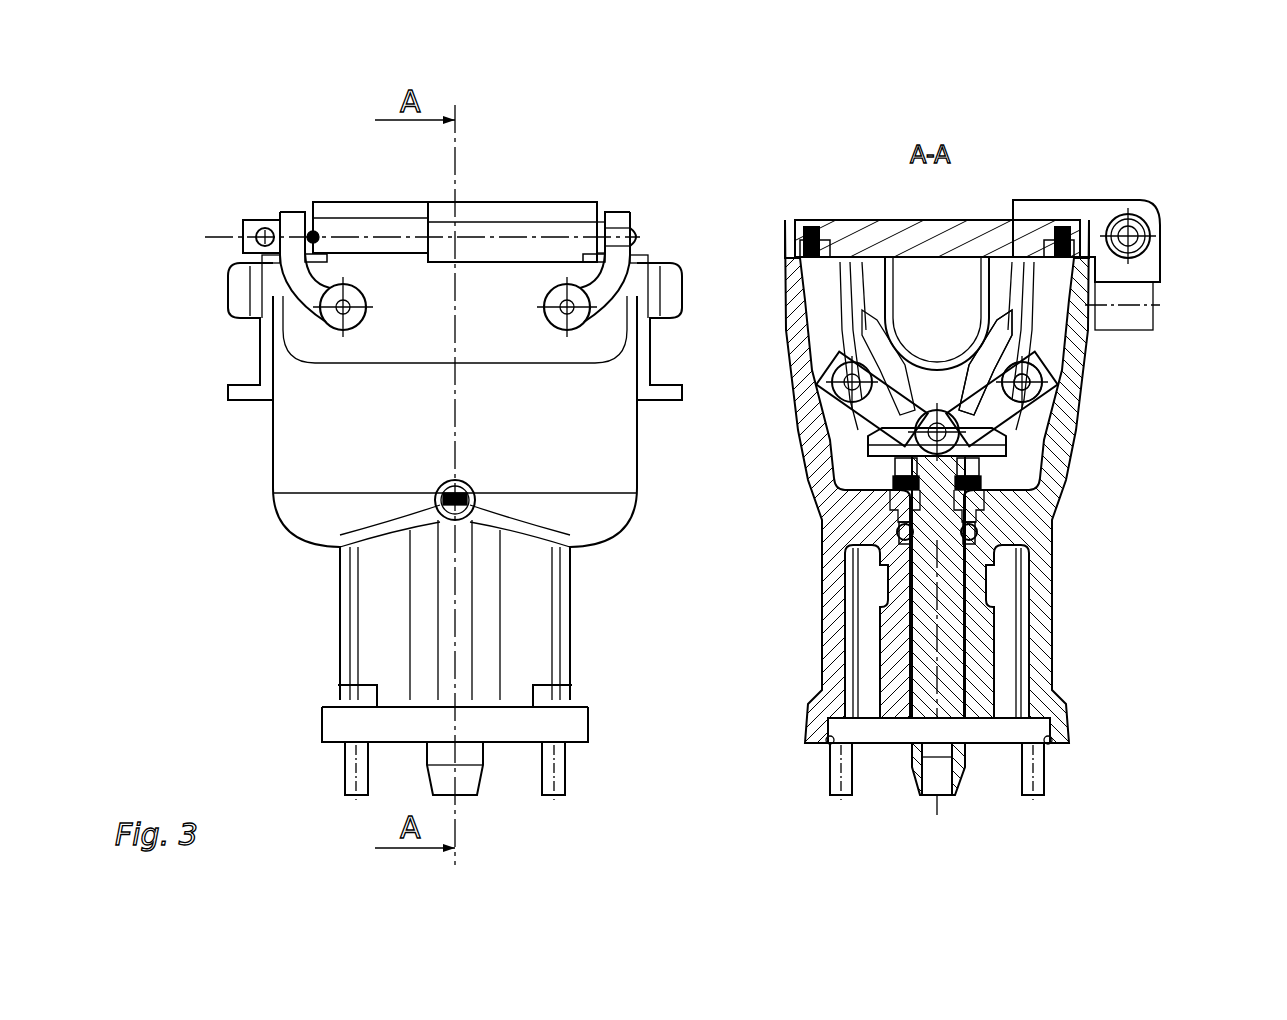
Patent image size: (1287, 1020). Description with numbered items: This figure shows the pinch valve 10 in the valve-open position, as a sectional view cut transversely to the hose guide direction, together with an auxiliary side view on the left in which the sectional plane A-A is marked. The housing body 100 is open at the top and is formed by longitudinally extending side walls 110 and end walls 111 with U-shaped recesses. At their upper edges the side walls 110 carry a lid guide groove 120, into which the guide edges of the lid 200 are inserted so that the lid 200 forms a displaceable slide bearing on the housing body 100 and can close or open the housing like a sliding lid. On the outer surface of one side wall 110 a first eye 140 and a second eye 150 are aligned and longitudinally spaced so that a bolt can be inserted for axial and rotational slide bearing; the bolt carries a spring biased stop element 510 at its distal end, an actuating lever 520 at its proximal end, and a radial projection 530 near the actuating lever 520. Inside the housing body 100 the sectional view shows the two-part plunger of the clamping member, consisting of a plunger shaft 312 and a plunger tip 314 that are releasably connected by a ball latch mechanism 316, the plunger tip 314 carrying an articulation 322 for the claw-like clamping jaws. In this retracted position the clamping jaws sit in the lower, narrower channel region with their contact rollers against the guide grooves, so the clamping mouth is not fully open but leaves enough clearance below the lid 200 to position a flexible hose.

The pinch valve 10 is at (783, 108).
The housing body 100 is at (797, 582).
The side walls 110 is at (548, 430).
The end walls 111 is at (275, 452).
The lid guide groove 120 is at (810, 255).
The first eye 140 is at (293, 212).
The second eye 150 is at (617, 212).
The lid 200 is at (540, 179).
The plunger shaft 312 is at (940, 560).
The plunger tip 314 is at (975, 447).
The ball latch mechanism 316 is at (968, 480).
The articulation 322 is at (940, 432).
The spring biased stop element 510 is at (637, 237).
The actuating lever 520 is at (265, 237).
The radial projection 530 is at (313, 237).